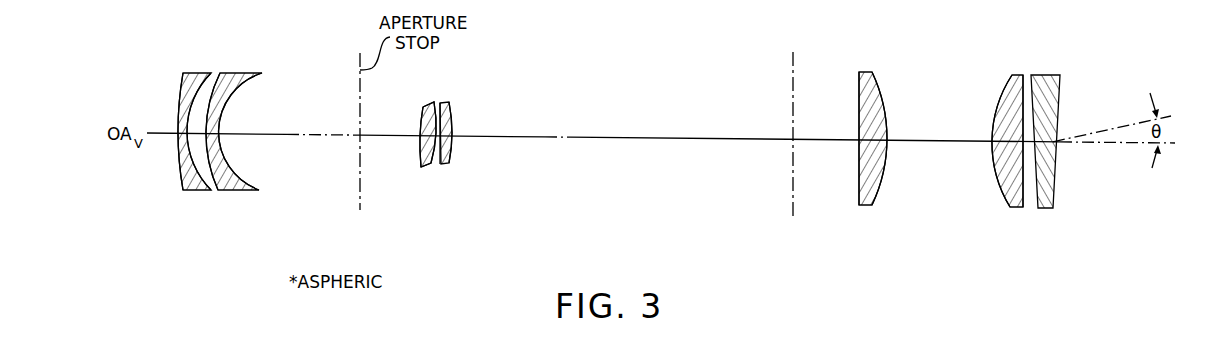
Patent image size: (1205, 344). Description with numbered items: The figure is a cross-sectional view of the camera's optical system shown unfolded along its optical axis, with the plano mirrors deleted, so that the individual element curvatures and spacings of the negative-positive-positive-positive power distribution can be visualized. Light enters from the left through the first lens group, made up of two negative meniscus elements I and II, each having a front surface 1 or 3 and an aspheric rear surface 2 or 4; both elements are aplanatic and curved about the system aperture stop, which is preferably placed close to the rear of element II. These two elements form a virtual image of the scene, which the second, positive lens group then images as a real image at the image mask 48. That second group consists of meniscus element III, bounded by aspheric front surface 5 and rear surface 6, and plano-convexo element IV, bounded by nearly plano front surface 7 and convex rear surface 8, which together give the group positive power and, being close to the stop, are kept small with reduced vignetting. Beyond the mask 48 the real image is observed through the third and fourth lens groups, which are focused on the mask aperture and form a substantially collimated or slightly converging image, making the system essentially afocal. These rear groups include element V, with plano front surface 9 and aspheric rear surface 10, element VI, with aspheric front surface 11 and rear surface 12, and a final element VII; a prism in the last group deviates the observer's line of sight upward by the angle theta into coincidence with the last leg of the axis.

The front surface of element I 1 is at (181, 99).
The rear surface of element I 2 is at (195, 102).
The front surface of element II 3 is at (224, 80).
The rear surface of element II 4 is at (250, 83).
The front surface of element III 5 is at (423, 116).
The rear surface of element III 6 is at (448, 112).
The front surface of element IV 7 is at (425, 148).
The rear surface of element IV 8 is at (451, 150).
The front surface of element V 9 is at (859, 100).
The rear surface of element V 10 is at (885, 103).
The front surface of element VI 11 is at (997, 104).
The rear surface of element VI 12 is at (1028, 195).
The image mask 48 is at (793, 72).
The first lens element I is at (199, 73).
The second lens element II is at (259, 48).
The third lens element III is at (430, 104).
The fourth lens element IV is at (461, 73).
The fifth lens element V is at (866, 72).
The sixth lens element VI is at (1019, 75).
The seventh lens element VII is at (1078, 36).